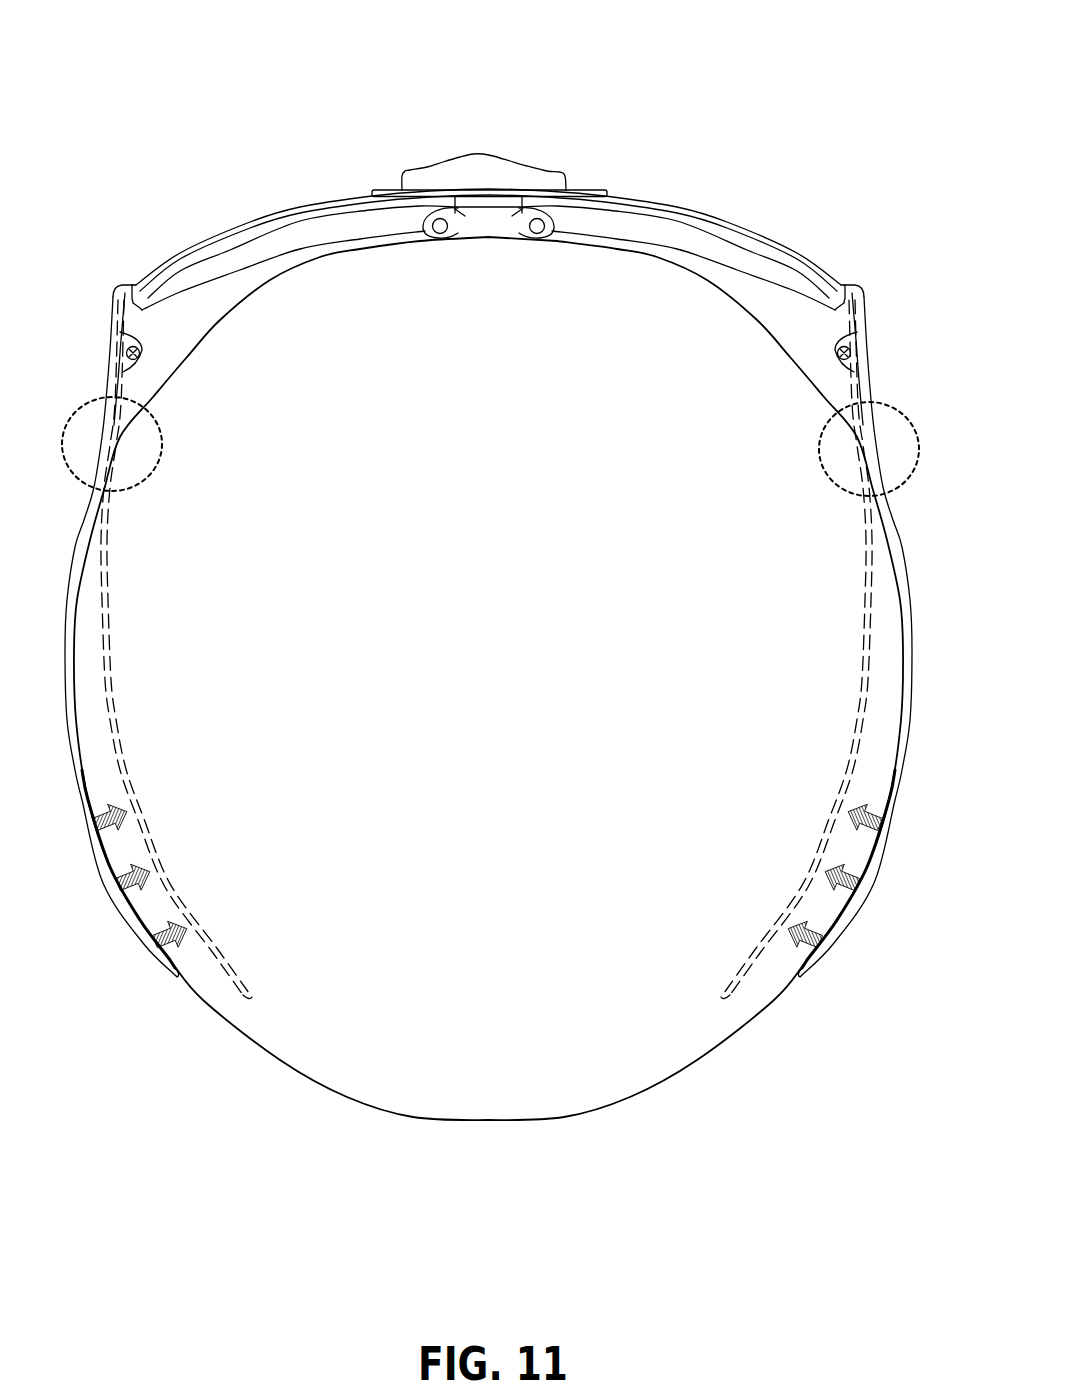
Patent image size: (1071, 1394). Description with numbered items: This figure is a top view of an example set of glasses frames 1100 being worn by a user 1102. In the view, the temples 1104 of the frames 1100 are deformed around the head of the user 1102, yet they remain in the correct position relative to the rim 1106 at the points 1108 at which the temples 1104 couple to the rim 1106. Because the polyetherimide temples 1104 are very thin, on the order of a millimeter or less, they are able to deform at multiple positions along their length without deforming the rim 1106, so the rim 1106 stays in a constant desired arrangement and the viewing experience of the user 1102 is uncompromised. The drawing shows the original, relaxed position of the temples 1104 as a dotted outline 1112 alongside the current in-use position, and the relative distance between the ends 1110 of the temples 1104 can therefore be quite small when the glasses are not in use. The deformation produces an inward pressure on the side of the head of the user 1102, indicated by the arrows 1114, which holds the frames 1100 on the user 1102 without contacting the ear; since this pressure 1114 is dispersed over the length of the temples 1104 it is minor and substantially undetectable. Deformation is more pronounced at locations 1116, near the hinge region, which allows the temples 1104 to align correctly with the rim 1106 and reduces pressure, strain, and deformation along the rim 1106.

The glasses frames 1100 is at (153, 50).
The user 1102 is at (513, 666).
The temples 1104 is at (119, 913).
The rim 1106 is at (250, 221).
The points 1108 is at (97, 332).
The ends of the temples 1110 is at (253, 1017).
The relaxed temple position (dashed) 1112 is at (130, 790).
The arrows 1114 is at (197, 962).
The locations 1116 is at (140, 462).